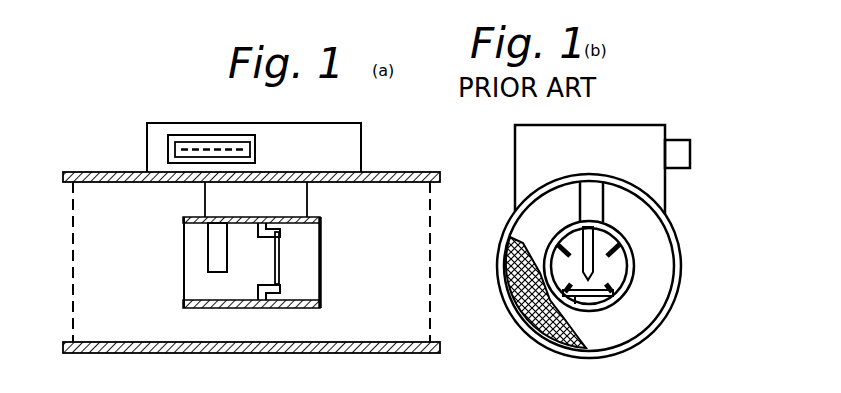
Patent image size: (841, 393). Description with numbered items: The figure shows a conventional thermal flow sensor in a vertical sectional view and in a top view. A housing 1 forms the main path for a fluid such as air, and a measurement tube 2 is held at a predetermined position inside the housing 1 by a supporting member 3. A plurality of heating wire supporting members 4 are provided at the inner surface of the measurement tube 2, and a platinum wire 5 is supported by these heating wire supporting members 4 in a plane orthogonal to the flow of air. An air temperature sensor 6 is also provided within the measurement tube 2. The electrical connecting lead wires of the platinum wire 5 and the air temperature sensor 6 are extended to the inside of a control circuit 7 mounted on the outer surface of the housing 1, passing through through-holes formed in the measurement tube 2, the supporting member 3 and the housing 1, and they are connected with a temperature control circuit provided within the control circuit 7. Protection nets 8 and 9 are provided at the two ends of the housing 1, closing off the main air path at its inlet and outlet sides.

In FIG. 1A, the housing 1 is at (391, 172).
In FIG. 1B, the housing 1 is at (672, 240).
In FIG. 1A, the measurement tube 2 is at (318, 220).
In FIG. 1B, the measurement tube 2 is at (634, 287).
In FIG. 1A, the supporting member 3 is at (205, 195).
In FIG. 1B, the supporting member 3 is at (604, 208).
In FIG. 1A, the heating wire supporting members 4 is at (280, 234).
In FIG. 1B, the heating wire supporting members 4 is at (631, 258).
In FIG. 1A, the platinum wire 5 is at (279, 262).
In FIG. 1B, the platinum wire 5 is at (522, 338).
In FIG. 1A, the air temperature sensor 6 is at (208, 248).
In FIG. 1B, the air temperature sensor 6 is at (580, 312).
In FIG. 1A, the control circuit 7 is at (215, 125).
In FIG. 1B, the control circuit 7 is at (652, 130).
In FIG. 1A, the protection net 8 is at (72, 295).
In FIG. 1A, the protection net 9 is at (430, 258).